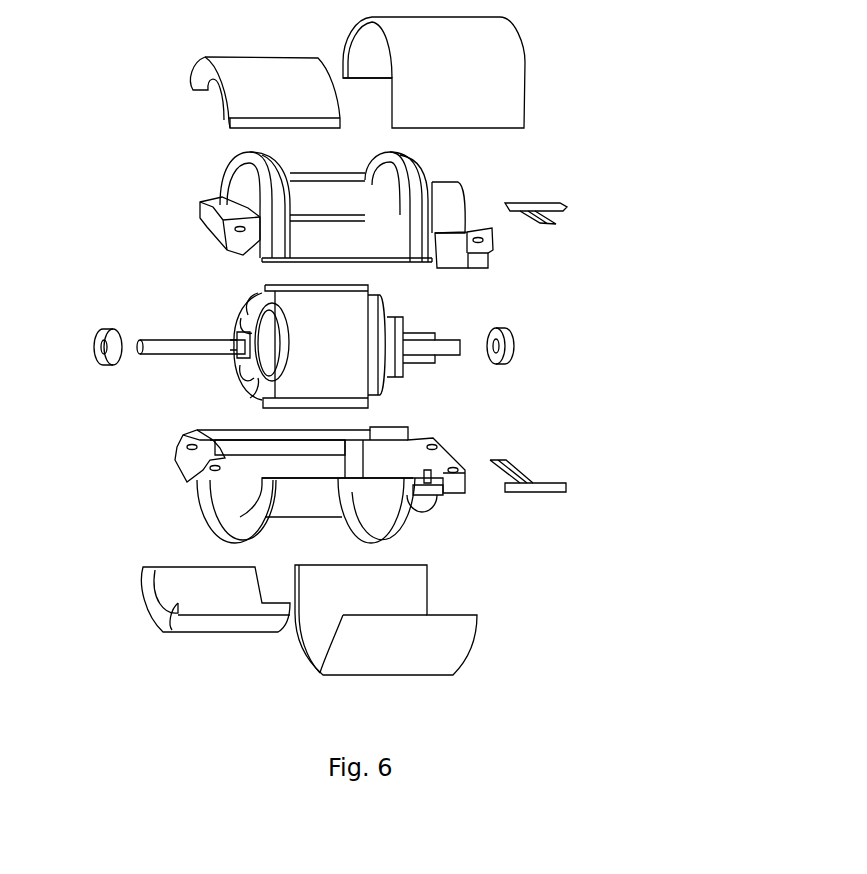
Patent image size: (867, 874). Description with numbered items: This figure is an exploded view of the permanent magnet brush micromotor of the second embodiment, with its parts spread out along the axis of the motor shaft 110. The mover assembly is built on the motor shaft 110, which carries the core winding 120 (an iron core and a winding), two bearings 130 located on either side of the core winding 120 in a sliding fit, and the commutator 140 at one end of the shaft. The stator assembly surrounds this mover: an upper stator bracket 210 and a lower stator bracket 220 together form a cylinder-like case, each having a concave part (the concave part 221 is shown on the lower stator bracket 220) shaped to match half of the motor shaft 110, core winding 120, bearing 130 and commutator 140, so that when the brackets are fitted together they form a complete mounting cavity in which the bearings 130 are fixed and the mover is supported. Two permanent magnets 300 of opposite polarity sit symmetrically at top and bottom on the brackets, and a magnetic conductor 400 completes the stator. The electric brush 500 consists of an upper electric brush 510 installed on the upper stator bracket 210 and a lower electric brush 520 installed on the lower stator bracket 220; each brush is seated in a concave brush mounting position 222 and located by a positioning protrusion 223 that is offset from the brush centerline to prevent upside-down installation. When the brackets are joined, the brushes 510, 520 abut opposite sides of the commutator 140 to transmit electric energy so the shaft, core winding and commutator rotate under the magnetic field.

The motor shaft 110 is at (181, 349).
The core winding 120 is at (298, 365).
The bearing 130 is at (109, 362).
The commutator 140 is at (425, 352).
The upper stator bracket 210 is at (312, 243).
The lower stator bracket 220 is at (265, 502).
The concave part 221 is at (277, 455).
The brush mounting position 222 is at (423, 488).
The positioning protrusion 223 is at (438, 490).
The permanent magnet 300 is at (235, 100).
The magnetic conductor 400 is at (445, 83).
The electric brush 500 is at (621, 170).
The upper electric brush 510 is at (535, 203).
The lower electric brush 520 is at (545, 491).